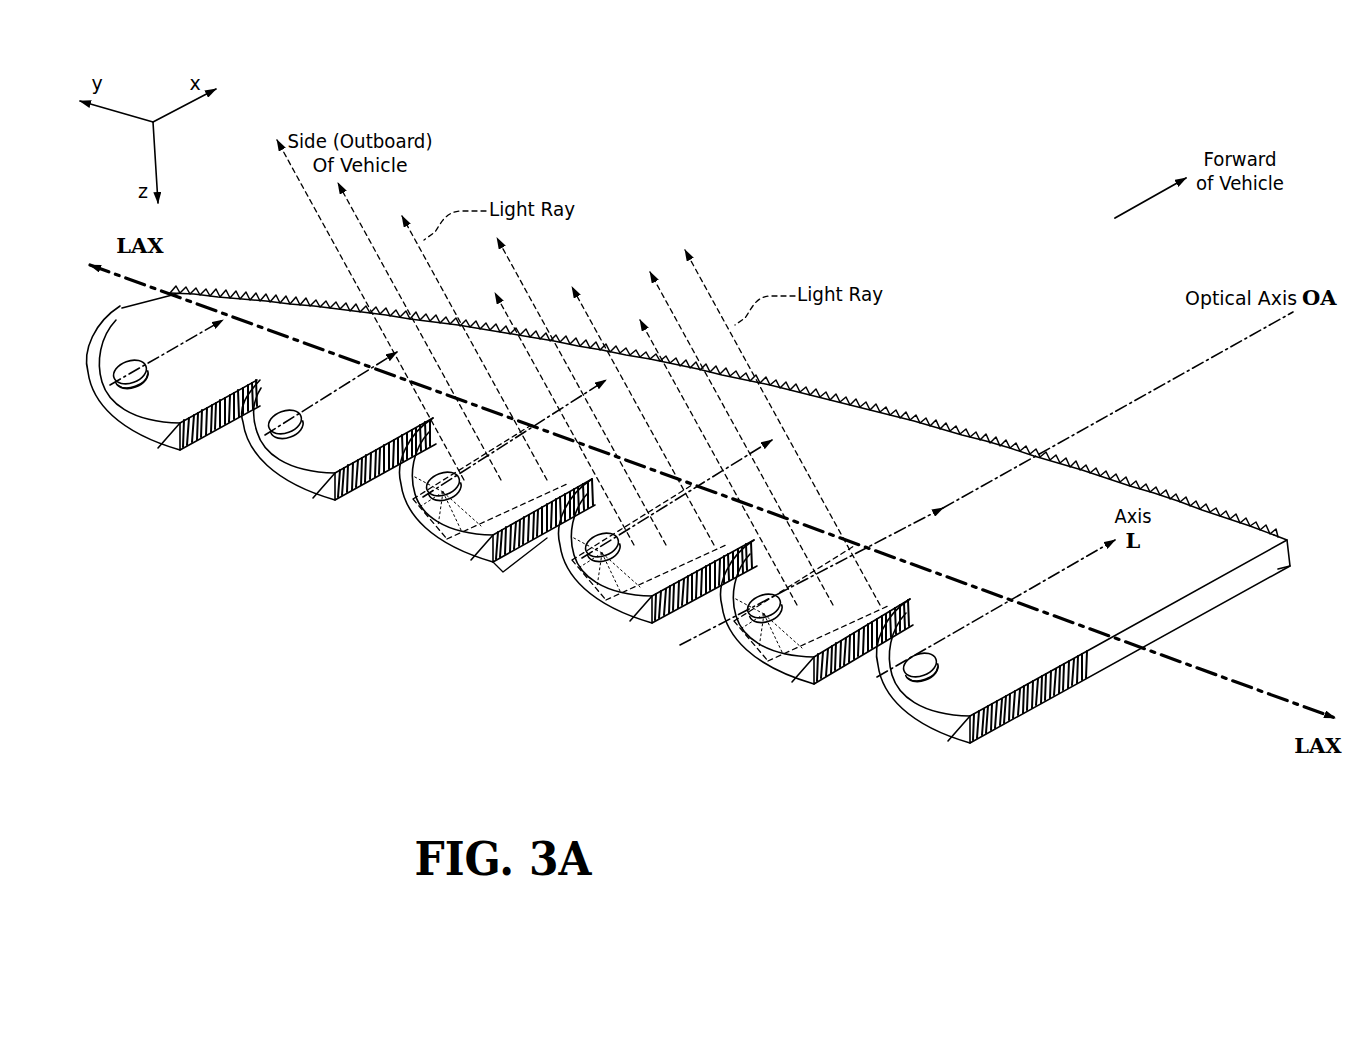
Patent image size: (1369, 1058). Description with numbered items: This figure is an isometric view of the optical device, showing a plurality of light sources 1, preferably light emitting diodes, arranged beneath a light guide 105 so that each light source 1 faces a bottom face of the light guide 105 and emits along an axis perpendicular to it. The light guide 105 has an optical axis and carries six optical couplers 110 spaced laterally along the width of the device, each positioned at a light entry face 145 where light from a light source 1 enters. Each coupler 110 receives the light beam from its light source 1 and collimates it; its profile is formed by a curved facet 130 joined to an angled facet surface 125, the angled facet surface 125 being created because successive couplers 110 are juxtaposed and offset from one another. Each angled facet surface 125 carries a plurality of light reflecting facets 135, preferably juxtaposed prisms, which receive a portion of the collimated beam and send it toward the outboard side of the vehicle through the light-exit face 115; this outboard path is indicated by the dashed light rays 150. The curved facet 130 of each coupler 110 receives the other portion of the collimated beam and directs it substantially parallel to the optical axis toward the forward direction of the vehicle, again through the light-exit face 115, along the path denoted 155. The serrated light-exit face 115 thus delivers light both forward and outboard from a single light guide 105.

The light source 1 is at (132, 386).
The light guide 105 is at (1223, 607).
The coupler 110 is at (967, 778).
The light-exit face 115 is at (1000, 345).
The angled facet surface 125 is at (357, 502).
The curved facet 130 is at (257, 455).
The plurality of light reflecting facets 135 is at (504, 573).
The light entry face 145 is at (922, 646).
The light ray path toward outboard side 150 is at (582, 400).
The light ray path toward forward direction 155 is at (430, 545).